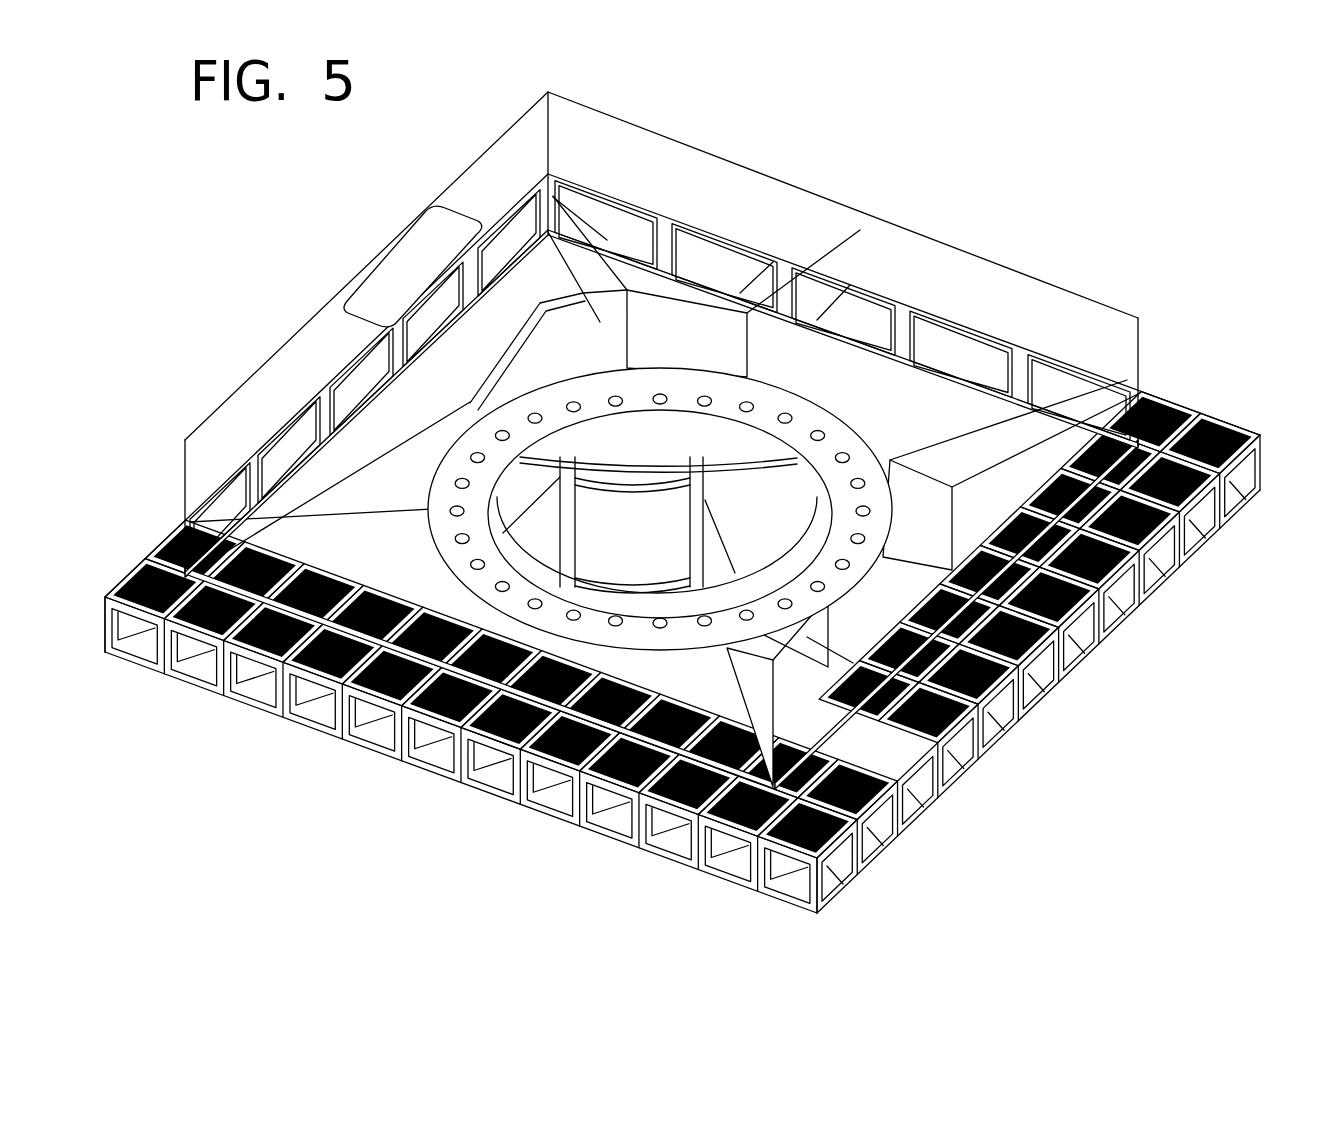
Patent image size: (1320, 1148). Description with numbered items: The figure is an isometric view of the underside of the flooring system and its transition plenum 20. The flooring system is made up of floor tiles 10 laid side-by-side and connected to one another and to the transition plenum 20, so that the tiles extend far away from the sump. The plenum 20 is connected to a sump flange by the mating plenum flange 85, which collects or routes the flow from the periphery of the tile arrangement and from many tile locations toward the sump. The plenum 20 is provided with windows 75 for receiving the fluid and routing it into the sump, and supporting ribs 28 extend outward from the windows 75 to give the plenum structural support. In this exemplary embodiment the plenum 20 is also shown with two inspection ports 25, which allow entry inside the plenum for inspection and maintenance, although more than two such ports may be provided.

The floor tiles 10 is at (1180, 408).
The transition plenum 20 is at (950, 265).
The inspection ports 25 is at (807, 637).
The supporting ribs 28 is at (383, 473).
The windows 75 is at (535, 358).
The mating plenum flange 85 is at (652, 630).